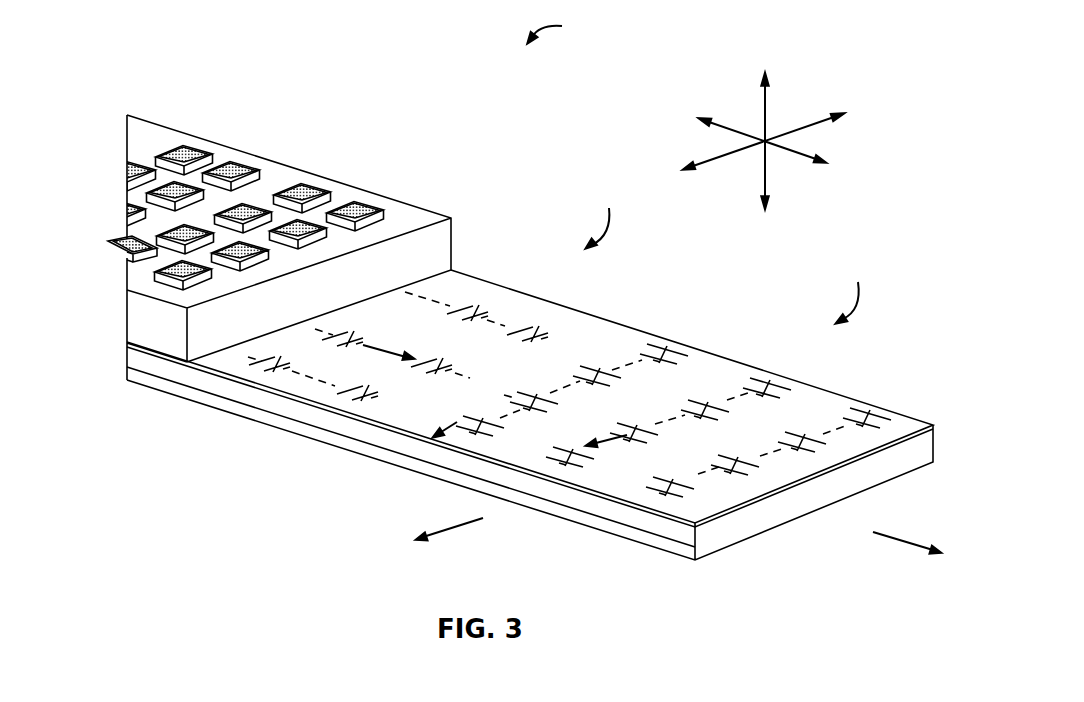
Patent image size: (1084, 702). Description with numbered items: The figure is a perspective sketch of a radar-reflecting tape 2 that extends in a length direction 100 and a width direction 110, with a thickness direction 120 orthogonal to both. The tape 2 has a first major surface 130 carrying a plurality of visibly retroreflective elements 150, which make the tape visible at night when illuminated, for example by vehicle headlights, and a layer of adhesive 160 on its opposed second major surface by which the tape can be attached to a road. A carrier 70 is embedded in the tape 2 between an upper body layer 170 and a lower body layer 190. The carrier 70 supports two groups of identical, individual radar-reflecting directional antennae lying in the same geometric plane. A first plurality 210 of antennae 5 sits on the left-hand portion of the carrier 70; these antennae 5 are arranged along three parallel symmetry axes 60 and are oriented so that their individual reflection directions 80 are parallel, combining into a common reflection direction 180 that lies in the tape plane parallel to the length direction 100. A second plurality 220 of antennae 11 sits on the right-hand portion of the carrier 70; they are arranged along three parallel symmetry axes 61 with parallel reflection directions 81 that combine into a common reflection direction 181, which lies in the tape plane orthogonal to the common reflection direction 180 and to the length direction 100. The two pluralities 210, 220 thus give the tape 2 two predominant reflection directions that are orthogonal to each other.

The radar-reflecting tape 2 is at (553, 28).
The radar-reflecting directional antennae 5 is at (468, 306).
The radar-reflecting directional antennae 11 is at (490, 430).
The symmetry axes 60 is at (318, 379).
The symmetry axes 61 is at (631, 364).
The carrier 70 is at (380, 425).
The reflection directions 80 is at (403, 355).
The reflection directions 81 is at (437, 434).
The length direction 100 is at (790, 152).
The width direction 110 is at (818, 118).
The thickness direction 120 is at (763, 100).
The first major surface 130 is at (415, 217).
The visibly retroreflective elements 150 is at (303, 181).
The layer of adhesive 160 is at (255, 413).
The upper body layer 170 is at (155, 320).
The common reflection direction 180 is at (912, 545).
The common reflection direction 181 is at (455, 527).
The lower body layer 190 is at (193, 380).
The first plurality 210 is at (607, 215).
The second plurality 220 is at (857, 289).